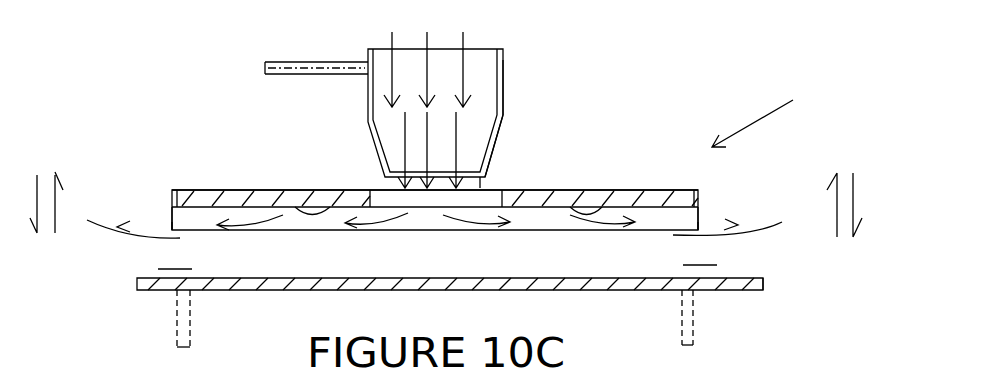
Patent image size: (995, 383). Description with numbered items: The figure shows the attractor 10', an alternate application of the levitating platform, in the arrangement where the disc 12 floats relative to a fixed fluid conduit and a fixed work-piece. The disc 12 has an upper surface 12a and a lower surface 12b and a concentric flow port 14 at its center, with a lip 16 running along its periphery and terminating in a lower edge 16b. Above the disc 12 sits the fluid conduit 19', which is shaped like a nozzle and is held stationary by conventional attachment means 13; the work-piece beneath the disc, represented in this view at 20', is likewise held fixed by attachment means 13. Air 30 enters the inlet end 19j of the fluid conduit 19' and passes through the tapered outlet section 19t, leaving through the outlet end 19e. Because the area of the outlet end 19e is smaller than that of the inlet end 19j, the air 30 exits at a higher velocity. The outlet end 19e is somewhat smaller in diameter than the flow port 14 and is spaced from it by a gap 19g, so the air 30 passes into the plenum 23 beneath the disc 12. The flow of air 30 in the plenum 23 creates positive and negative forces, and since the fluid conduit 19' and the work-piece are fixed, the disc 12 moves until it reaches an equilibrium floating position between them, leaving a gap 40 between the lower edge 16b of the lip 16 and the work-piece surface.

The attractor 10' is at (773, 115).
The disc 12 is at (212, 200).
The upper surface 12a is at (277, 190).
The lower surface 12b is at (329, 206).
The attachment means 13 is at (340, 65).
The concentric flow port 14 is at (385, 190).
The lip 16 is at (173, 218).
The lower edge 16b is at (173, 230).
The fluid conduit 19' is at (411, 90).
The inlet end 19j is at (460, 48).
The tapered outlet section 19t is at (503, 127).
The outlet end 19e is at (488, 164).
The gap 19g is at (483, 183).
The base assembly 20' is at (798, 327).
The plenum 23 is at (537, 248).
The air 30 is at (465, 60).
The gap 40 is at (437, 256).